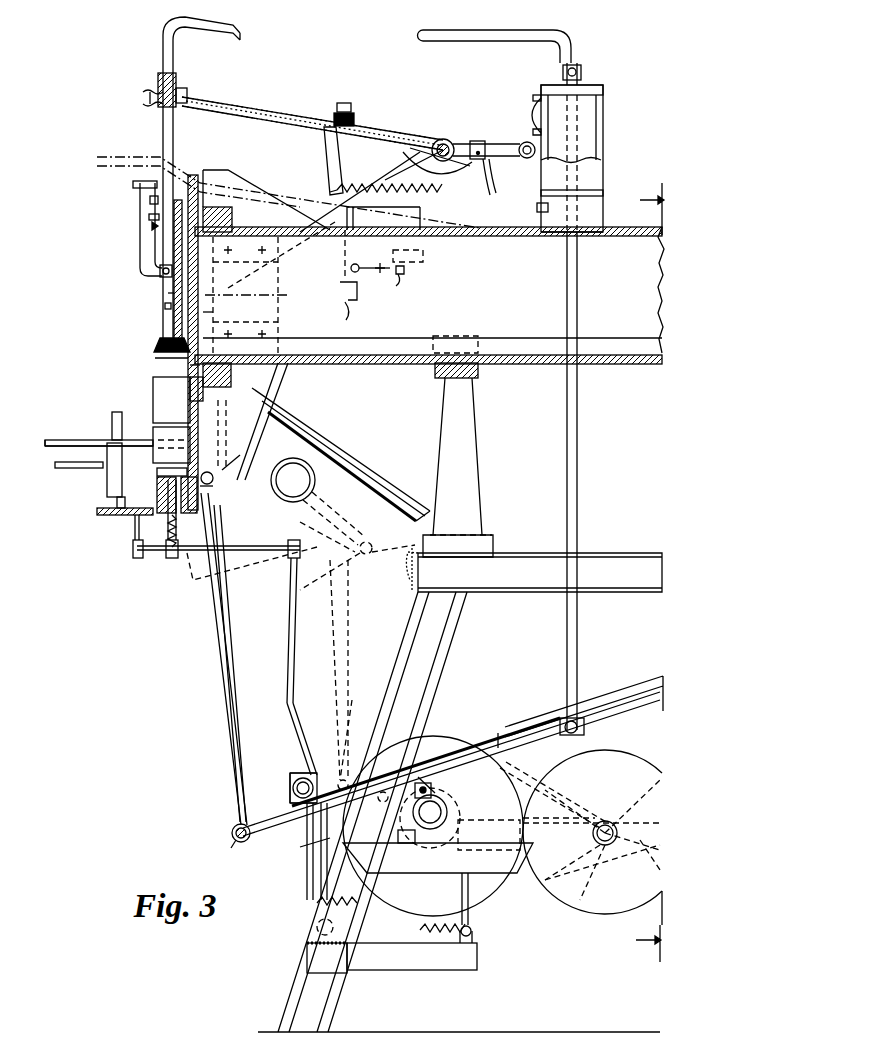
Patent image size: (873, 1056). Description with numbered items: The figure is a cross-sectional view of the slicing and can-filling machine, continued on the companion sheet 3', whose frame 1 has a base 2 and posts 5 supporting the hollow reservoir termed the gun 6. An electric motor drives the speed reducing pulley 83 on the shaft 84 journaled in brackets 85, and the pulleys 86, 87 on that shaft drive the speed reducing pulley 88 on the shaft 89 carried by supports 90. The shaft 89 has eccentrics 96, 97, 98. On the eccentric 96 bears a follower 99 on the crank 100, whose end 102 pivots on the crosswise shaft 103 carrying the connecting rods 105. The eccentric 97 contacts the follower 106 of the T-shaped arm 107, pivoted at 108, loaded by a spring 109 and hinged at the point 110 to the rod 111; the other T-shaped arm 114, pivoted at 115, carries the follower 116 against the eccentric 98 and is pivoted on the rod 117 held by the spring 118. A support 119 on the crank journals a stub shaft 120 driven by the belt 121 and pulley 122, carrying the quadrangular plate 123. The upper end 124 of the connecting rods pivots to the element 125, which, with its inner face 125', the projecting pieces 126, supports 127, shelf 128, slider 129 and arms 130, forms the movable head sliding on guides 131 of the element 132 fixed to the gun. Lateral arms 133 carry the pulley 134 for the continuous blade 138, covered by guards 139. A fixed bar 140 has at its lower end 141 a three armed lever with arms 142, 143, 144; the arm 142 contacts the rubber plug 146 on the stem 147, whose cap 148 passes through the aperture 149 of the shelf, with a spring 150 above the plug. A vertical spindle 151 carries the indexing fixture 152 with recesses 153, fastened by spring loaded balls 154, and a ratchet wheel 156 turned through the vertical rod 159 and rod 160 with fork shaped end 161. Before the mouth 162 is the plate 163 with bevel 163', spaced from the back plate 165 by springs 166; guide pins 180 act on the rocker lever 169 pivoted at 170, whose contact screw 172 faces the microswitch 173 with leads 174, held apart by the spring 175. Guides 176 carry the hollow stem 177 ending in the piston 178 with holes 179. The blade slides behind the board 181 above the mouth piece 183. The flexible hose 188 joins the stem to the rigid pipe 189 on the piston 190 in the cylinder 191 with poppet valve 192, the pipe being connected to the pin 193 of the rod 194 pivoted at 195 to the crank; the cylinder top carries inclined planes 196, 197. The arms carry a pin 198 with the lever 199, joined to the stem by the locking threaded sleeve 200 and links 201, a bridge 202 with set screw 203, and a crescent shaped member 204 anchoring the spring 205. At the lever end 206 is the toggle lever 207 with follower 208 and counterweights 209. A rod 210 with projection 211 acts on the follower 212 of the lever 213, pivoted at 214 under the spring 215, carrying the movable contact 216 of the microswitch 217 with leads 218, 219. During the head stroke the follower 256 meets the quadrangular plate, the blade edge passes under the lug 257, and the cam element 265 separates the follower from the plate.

The frame 1 is at (282, 1000).
The base 2 is at (640, 912).
The posts 5 is at (478, 466).
The gun 6 is at (504, 282).
The speed reducing pulley 83 is at (568, 908).
The shaft 84 is at (605, 820).
The brackets 85 is at (632, 865).
The pulley 86 is at (603, 848).
The pulley 87 is at (592, 831).
The speed reducing pulley 88 is at (506, 778).
The shaft 89 is at (448, 805).
The supports 90 is at (406, 846).
The eccentric 96 is at (486, 902).
The eccentric 97 is at (435, 850).
The eccentric 98 is at (433, 790).
The follower 99 is at (427, 781).
The crank 100 is at (502, 740).
The end of crank 102 is at (236, 845).
The crosswise arranged shaft 103 is at (232, 835).
The connecting rods 105 is at (226, 783).
The follower 106 is at (448, 823).
The arm 107 is at (461, 905).
The pivot 108 is at (473, 935).
The spring 109 is at (424, 926).
The hinge point 110 is at (480, 822).
The rod 111 is at (540, 824).
The T shaped arm 114 is at (320, 848).
The pivot point 115 is at (317, 938).
The follower 116 is at (400, 766).
The rod 117 is at (308, 883).
The spring 118 is at (317, 906).
The support 119 is at (292, 803).
The stub shaft 120 is at (292, 788).
The belt 121 is at (528, 716).
The pulley 122 is at (312, 773).
The quadrangular plate 123 is at (290, 775).
The upper end of connecting rods 124 is at (200, 500).
The element 125 is at (225, 659).
The inner face 125' is at (232, 474).
The projecting pieces 126 is at (215, 488).
The supports 127 is at (85, 470).
The shelf 128 is at (75, 447).
The slider 129 is at (235, 456).
The arms 130 is at (296, 196).
The lateral guides 131 is at (222, 430).
The element 132 is at (282, 375).
The lateral arms 133 is at (293, 480).
The pulley 134 is at (323, 498).
The continuous blade 138 is at (372, 482).
The guards 139 is at (330, 441).
The fixed bar 140 is at (326, 521).
The lower end of bar 141 is at (364, 549).
The arm 142 is at (241, 580).
The arm 143 is at (338, 652).
The arm 144 is at (380, 570).
The rubber plug 146 is at (172, 560).
The stem 147 is at (168, 516).
The cap 148 is at (158, 472).
The aperture 149 is at (154, 452).
The spring 150 is at (166, 556).
The vertical spindle 151 is at (108, 480).
The indexing fixture 152 is at (68, 441).
The peripheral circular recesses 153 is at (52, 438).
The spring loaded balls 154 is at (110, 432).
The ratchet wheel 156 is at (100, 514).
The vertical rod 159 is at (132, 542).
The rod 160 is at (268, 546).
The fork shaped end 161 is at (294, 565).
The mouth 162 is at (212, 312).
The plate 163 is at (247, 287).
The bevel 163' is at (173, 371).
The supporting back plate 165 is at (191, 387).
The spring 166 is at (136, 333).
The rocker lever 169 is at (139, 252).
The pivot point 170 is at (160, 275).
The adjustable contact screw 172 is at (149, 202).
The microswitch 173 is at (148, 219).
The leads 174 is at (133, 185).
The spring 175 is at (150, 228).
The guides 176 is at (165, 307).
The stem 177 is at (175, 128).
The piston 178 is at (156, 348).
The holes 179 is at (160, 359).
The guide pins 180 is at (168, 293).
The board 181 is at (232, 378).
The mouth piece 183 is at (152, 389).
The flexible hose 188 is at (478, 42).
The rigid pipe 189 is at (575, 133).
The piston 190 is at (604, 192).
The cylinder 191 is at (603, 172).
The poppet valve 192 is at (549, 209).
The pin 193 is at (562, 72).
The rod 194 is at (578, 288).
The pivot point 195 is at (582, 733).
The inclined plane 196 is at (532, 98).
The inclined plane 197 is at (531, 120).
The pin 198 is at (444, 139).
The lever 199 is at (388, 134).
The locking threaded sleeve 200 is at (160, 85).
The links 201 is at (188, 95).
The bridge 202 is at (328, 118).
The set screw 203 is at (350, 104).
The crescent shaped member 204 is at (455, 170).
The spring 205 is at (370, 180).
The end of lever 206 is at (480, 155).
The toggle lever 207 is at (498, 145).
The follower 208 is at (527, 160).
The counterweights 209 is at (491, 197).
The rod 210 is at (350, 240).
The projection 211 is at (346, 315).
The follower 212 is at (350, 268).
The lever 213 is at (360, 290).
The pivot 214 is at (380, 259).
The spring 215 is at (400, 284).
The movable contact 216 is at (406, 272).
The microswitch 217 is at (425, 256).
The lead 218 is at (410, 216).
The lead 219 is at (425, 216).
The follower 256 is at (353, 702).
The lug 257 is at (222, 210).
The cam element 265 is at (408, 582).
The section line 3' is at (647, 569).